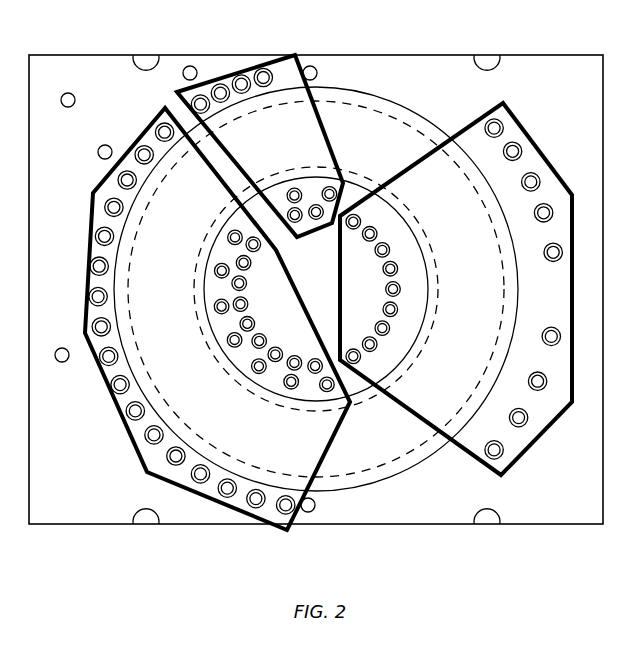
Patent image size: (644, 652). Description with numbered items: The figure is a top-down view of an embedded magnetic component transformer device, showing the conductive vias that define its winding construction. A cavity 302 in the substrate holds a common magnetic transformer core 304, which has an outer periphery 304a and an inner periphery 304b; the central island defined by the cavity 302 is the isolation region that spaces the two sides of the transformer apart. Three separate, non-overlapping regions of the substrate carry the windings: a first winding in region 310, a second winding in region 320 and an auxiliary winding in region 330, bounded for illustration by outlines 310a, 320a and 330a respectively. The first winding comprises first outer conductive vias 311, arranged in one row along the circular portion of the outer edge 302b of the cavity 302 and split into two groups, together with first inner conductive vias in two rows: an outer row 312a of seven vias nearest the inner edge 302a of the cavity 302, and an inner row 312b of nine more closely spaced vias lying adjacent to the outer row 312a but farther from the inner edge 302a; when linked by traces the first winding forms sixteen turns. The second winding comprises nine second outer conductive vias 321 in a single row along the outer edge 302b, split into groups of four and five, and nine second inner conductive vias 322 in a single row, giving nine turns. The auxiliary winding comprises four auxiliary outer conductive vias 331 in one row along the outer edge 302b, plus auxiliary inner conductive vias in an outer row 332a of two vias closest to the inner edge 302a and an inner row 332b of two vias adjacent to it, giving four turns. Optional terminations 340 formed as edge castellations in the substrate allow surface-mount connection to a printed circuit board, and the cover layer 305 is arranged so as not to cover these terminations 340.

The cavity 302 is at (352, 490).
The inner edge of the cavity 302a is at (195, 293).
The outer edge of the cavity 302b is at (358, 90).
The magnetic transformer core 304 is at (408, 438).
The outer periphery of the magnetic transformer core 304a is at (437, 446).
The inner periphery of the magnetic transformer core 304b is at (368, 408).
The cover layer 305 is at (582, 62).
The first winding region 310 is at (217, 319).
The outline of the first winding region 310a is at (97, 187).
The first outer conductive vias 311 is at (140, 152).
The outer row of first inner conductive vias 312a is at (230, 236).
The inner row of first inner conductive vias 312b is at (258, 348).
The second winding region 320 is at (456, 289).
The outline of the second winding region 320a is at (462, 130).
The second outer conductive vias 321 is at (502, 125).
The second inner conductive vias 322 is at (380, 323).
The auxiliary winding region 330 is at (260, 146).
The outline of the auxiliary winding region 330a is at (329, 132).
The auxiliary outer conductive vias 331 is at (262, 70).
The outer row of auxiliary inner conductive vias 332a is at (295, 187).
The inner row of auxiliary inner conductive vias 332b is at (318, 222).
The terminations 340 is at (146, 60).